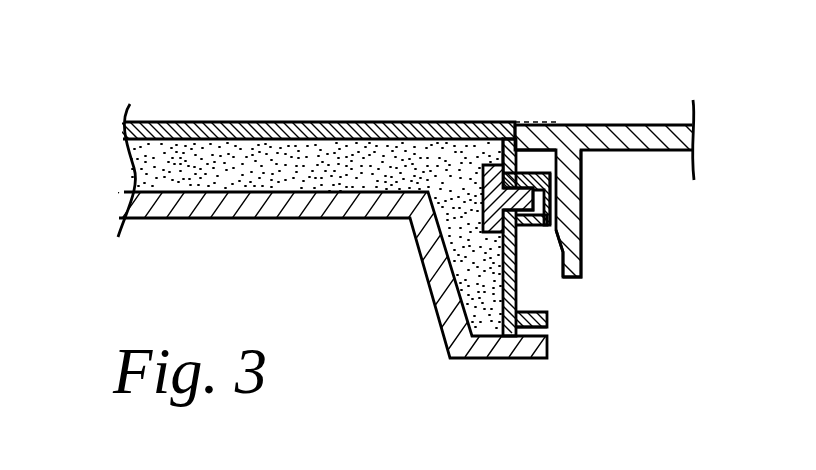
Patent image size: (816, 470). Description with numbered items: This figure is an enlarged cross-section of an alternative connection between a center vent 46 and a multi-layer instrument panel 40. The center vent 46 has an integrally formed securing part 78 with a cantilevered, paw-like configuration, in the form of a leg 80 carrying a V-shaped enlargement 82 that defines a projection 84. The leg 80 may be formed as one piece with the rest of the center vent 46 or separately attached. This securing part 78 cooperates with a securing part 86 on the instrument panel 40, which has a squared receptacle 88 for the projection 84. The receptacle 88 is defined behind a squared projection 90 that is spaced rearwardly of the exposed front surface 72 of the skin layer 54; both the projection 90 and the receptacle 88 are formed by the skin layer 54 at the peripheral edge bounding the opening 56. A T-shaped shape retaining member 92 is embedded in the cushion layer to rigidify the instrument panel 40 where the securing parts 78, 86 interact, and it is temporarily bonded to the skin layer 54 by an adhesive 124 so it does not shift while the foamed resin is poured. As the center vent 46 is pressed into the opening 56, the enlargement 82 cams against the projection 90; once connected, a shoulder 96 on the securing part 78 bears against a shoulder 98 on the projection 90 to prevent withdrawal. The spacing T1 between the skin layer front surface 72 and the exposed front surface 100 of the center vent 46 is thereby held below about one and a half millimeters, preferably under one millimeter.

The instrument panel 40 is at (117, 218).
The skin layer 54 is at (207, 122).
The front surface of the skin layer 72 is at (318, 126).
The opening 56 is at (528, 298).
The center vent 46 is at (650, 125).
The front surface of the center vent 100 is at (678, 125).
The squared projection 90 is at (548, 172).
The shoulder on the securing part 96 is at (547, 207).
The securing part on the instrument panel 86 is at (550, 202).
The securing part 78 is at (581, 218).
The shoulder on the projection 98 is at (550, 237).
The leg 80 is at (581, 254).
The V-shaped enlargement 82 is at (546, 264).
The projection 84 is at (541, 202).
The squared receptacle 88 is at (528, 236).
The shape retaining member 92 is at (500, 203).
The adhesive 124 is at (548, 177).
The spacing T1 is at (528, 150).